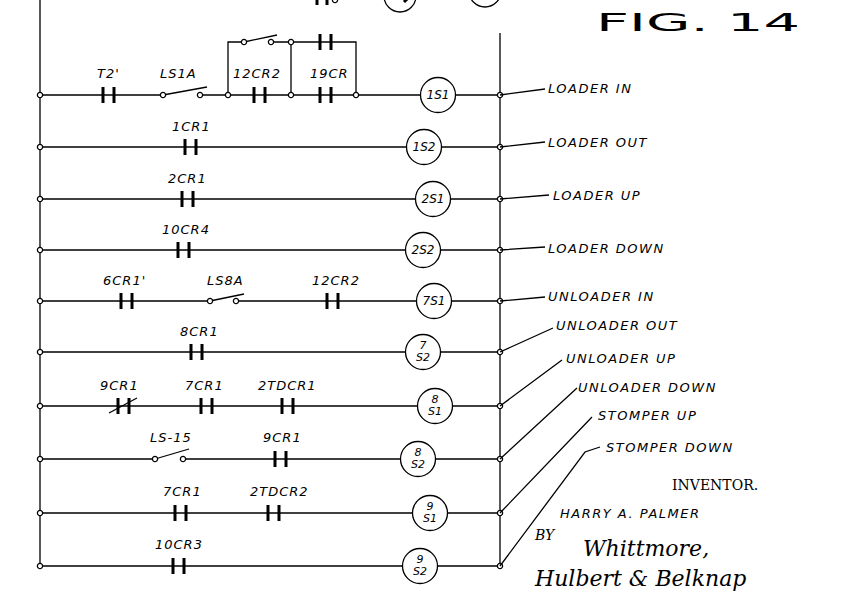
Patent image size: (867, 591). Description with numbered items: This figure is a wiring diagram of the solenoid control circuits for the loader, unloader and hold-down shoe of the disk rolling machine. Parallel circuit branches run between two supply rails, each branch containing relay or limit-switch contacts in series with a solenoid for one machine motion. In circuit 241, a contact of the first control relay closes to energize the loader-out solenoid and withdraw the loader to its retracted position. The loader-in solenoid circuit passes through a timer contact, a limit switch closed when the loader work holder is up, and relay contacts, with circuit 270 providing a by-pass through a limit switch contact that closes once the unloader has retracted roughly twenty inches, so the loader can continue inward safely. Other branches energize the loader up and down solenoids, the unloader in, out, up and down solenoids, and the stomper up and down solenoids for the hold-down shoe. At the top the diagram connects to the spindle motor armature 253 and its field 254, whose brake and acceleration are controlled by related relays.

The circuit 241 is at (97, 145).
The spindle motor armature 253 is at (393, 12).
The spindle motor field 254 is at (477, 3).
The circuit 270 is at (228, 63).